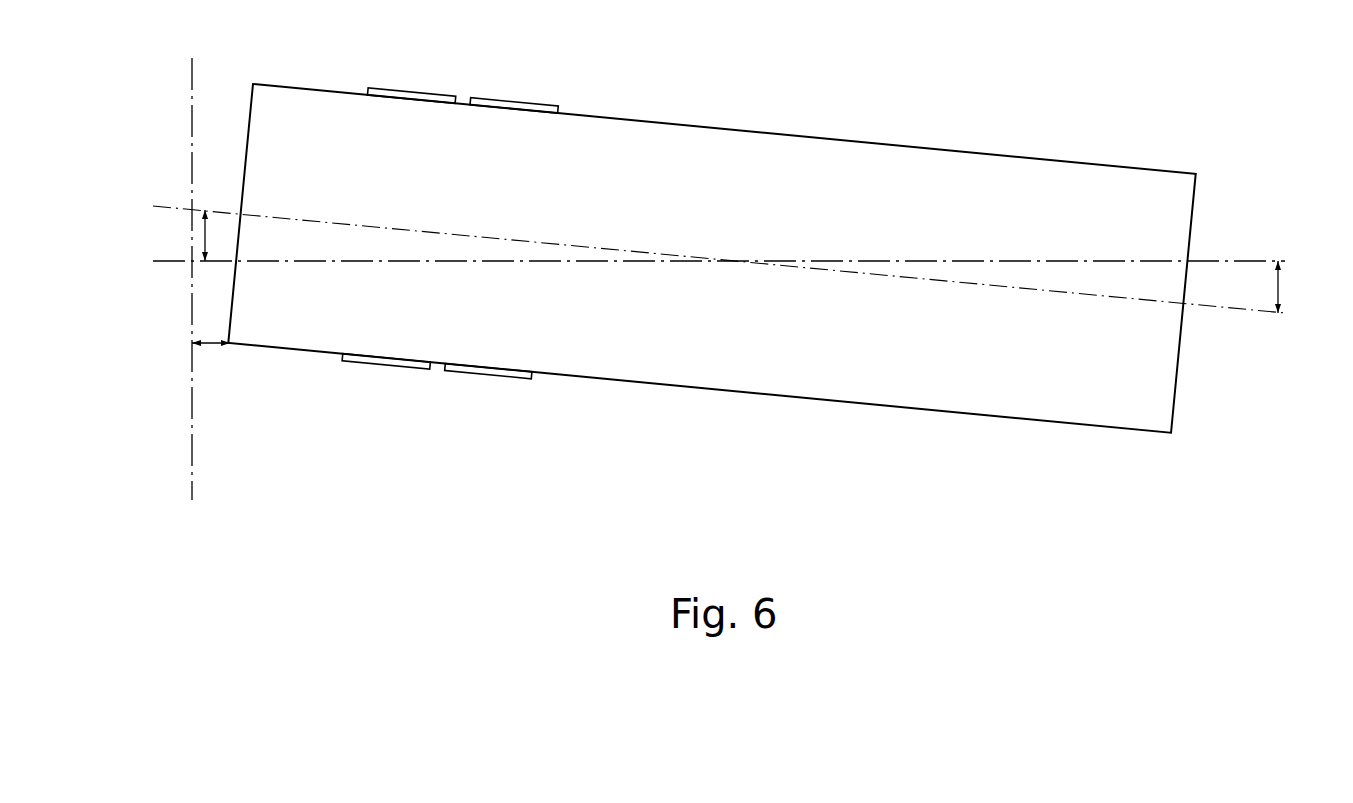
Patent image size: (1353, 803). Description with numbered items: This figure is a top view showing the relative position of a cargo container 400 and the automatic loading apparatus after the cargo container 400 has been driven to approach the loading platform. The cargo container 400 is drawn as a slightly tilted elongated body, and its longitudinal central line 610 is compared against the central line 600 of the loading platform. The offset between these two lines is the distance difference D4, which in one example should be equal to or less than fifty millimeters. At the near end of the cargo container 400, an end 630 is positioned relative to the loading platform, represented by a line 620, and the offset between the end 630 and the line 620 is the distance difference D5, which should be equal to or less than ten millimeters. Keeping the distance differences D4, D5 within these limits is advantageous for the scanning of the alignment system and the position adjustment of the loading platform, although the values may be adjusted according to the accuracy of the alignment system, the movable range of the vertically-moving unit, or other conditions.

The cargo container 400 is at (828, 162).
The central line of the loading platform 600 is at (1227, 260).
The longitudinal central line of the cargo container 610 is at (165, 203).
The line 620 is at (190, 445).
The end of the cargo container 630 is at (228, 350).
The distance difference D4 is at (203, 238).
The distance difference D5 is at (210, 345).